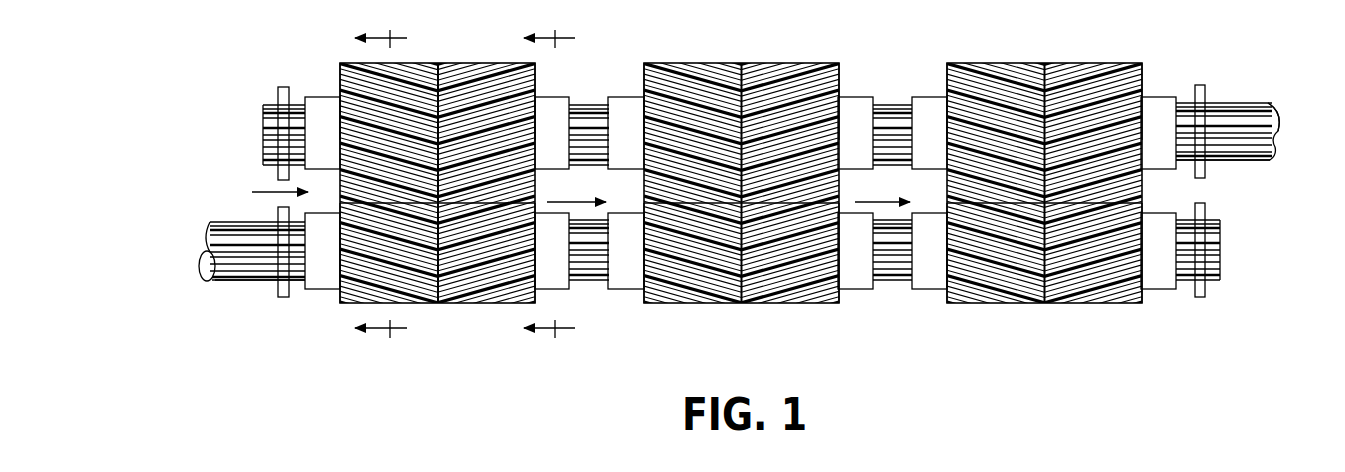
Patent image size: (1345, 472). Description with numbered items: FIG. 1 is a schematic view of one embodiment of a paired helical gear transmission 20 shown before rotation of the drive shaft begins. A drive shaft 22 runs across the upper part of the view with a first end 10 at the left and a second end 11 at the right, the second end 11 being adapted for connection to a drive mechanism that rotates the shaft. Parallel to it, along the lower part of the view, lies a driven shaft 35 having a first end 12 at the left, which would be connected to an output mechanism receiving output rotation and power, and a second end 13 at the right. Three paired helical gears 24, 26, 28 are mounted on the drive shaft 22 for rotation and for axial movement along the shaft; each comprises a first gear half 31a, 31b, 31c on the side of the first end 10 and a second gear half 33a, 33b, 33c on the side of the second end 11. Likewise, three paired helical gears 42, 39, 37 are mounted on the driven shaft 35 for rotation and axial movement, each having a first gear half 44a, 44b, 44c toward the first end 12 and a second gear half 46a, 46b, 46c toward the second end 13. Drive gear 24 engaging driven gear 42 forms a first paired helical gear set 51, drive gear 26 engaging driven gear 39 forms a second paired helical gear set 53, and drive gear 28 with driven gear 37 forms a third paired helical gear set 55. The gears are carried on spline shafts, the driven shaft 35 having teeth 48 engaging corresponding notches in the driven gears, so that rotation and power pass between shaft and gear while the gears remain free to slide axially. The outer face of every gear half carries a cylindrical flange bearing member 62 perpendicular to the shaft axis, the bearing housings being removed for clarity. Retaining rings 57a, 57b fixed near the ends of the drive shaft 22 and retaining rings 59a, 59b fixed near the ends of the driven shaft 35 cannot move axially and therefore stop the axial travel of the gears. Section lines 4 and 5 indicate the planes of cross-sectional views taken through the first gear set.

The first end 10 is at (264, 124).
The second end 11 is at (1279, 130).
The first end 12 is at (211, 231).
The second end 13 is at (1220, 240).
The roller assembly 20 is at (878, 45).
The drive shaft 22 is at (1245, 103).
The paired helical gear 24 is at (439, 62).
The paired helical gear 26 is at (743, 62).
The paired helical gear 28 is at (1046, 62).
The first gear half 31a is at (341, 78).
The first gear half 31b is at (688, 62).
The first gear half 31c is at (1023, 62).
The second gear half 33a is at (536, 83).
The second gear half 33b is at (839, 83).
The second gear half 33c is at (1143, 65).
The driven shaft 35 is at (240, 282).
The paired helical gear 37 is at (1044, 320).
The paired helical gear 39 is at (741, 320).
The paired helical gear 42 is at (437, 320).
The first gear half 44a is at (341, 302).
The first gear half 44b is at (688, 304).
The first gear half 44c is at (1022, 304).
The second gear half 46a is at (460, 303).
The second gear half 46b is at (778, 303).
The second gear half 46c is at (1093, 303).
The teeth 48 is at (1262, 161).
The first paired helical gear set 51 is at (262, 192).
The second paired helical gear set 53 is at (557, 202).
The material flow direction 55 is at (863, 202).
The retaining ring 57a is at (283, 87).
The retaining ring 57b is at (1202, 85).
The retaining ring 59a is at (280, 297).
The retaining ring 59b is at (1205, 296).
The cylindrical flange bearing member 62 is at (336, 147).
The section line 4— 4 is at (367, 183).
The section line 5 is at (536, 183).